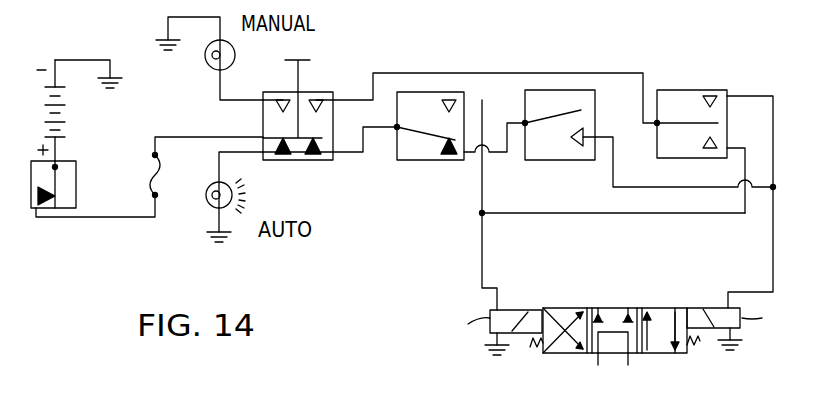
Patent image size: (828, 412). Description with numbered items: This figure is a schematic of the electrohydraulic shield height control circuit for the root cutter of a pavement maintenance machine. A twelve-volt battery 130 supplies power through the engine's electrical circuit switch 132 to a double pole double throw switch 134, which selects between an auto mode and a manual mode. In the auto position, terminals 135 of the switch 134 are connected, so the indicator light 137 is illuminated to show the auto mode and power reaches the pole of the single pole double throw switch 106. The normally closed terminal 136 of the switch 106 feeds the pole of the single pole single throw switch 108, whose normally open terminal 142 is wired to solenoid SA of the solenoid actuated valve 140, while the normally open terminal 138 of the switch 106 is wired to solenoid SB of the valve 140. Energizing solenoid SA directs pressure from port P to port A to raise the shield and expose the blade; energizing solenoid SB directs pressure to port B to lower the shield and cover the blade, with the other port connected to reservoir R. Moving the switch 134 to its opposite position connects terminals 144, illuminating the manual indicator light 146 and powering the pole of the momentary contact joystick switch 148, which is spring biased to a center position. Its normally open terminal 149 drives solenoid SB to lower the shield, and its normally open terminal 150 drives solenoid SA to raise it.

The single pole double throw switch 106 is at (410, 163).
The single pole single throw switch 108 is at (573, 160).
The battery 130 is at (70, 116).
The electrical circuit switch 132 is at (76, 184).
The double pole double throw switch 134 is at (286, 157).
The terminals 135 is at (295, 158).
The normally closed terminal 136 is at (447, 156).
The indicator light 137 is at (204, 197).
The normally open terminal 138 is at (450, 98).
The solenoid actuated valve 140 is at (578, 308).
The normally open terminal 142 is at (586, 136).
The terminals 144 is at (317, 98).
The indicator light 146 is at (232, 52).
The single pole double throw momentary contact switch 148 is at (672, 90).
The normally open terminal 149 is at (700, 148).
The normally open terminal 150 is at (710, 95).